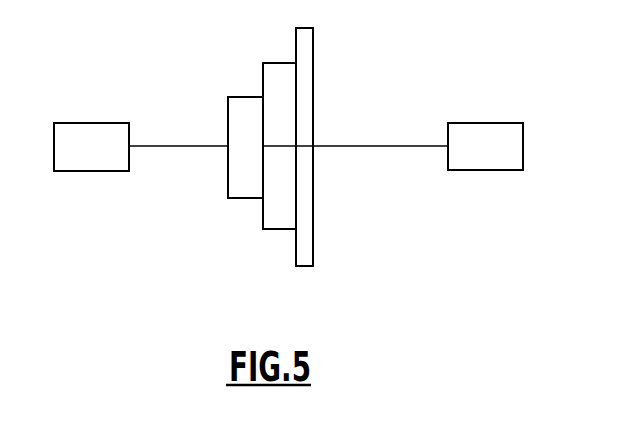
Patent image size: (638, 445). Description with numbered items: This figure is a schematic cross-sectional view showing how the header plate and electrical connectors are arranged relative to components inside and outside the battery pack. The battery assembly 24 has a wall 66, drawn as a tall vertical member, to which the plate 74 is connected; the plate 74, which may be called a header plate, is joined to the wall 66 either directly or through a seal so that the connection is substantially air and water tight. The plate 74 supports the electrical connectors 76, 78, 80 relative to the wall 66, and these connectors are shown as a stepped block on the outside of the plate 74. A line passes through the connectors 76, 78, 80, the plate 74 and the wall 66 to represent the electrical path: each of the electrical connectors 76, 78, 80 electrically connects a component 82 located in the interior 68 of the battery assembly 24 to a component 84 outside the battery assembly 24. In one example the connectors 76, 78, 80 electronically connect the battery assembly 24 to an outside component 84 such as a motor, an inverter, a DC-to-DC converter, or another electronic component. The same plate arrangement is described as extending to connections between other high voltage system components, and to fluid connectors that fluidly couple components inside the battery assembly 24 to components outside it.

The battery assembly 24 is at (211, 257).
The wall 66 is at (304, 27).
The interior 68 is at (416, 107).
The plate 74 is at (275, 80).
The electrical connector 76 is at (179, 139).
The electrical connector 78 is at (179, 139).
The electrical connector 80 is at (240, 115).
The component 82 is at (501, 159).
The component 84 is at (106, 158).